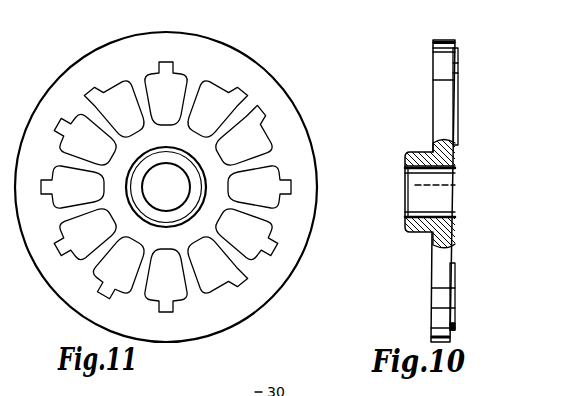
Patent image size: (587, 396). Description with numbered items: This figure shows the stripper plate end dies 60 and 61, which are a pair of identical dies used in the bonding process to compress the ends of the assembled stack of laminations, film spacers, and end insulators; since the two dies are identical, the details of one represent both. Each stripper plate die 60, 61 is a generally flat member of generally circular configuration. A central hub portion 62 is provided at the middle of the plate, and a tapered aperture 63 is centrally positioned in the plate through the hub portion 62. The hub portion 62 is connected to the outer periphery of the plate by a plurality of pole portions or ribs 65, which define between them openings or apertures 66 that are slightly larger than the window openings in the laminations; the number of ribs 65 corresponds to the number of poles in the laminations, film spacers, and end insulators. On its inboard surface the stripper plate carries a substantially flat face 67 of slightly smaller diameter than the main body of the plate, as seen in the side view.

In FIG. 11, the stripper plate die 60 is at (170, 183).
In FIG. 10, the stripper plate die 60 is at (443, 184).
In FIG. 11, the stripper plate die 61 is at (294, 72).
In FIG. 10, the stripper plate die 61 is at (400, 71).
In FIG. 11, the central hub portion 62 is at (159, 228).
In FIG. 10, the central hub portion 62 is at (416, 232).
In FIG. 11, the tapered aperture 63 is at (183, 202).
In FIG. 10, the tapered aperture 63 is at (420, 168).
In FIG. 11, the pole portions or ribs 65 is at (143, 97).
In FIG. 11, the openings or apertures 66 is at (119, 94).
In FIG. 10, the flat face 67 is at (455, 296).